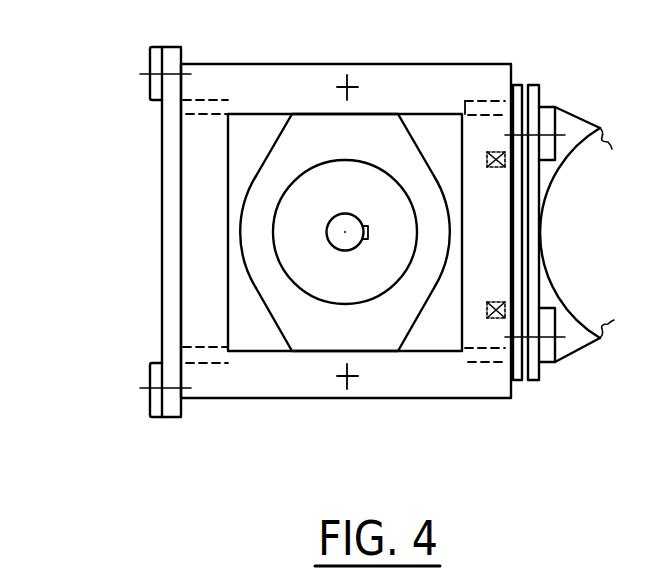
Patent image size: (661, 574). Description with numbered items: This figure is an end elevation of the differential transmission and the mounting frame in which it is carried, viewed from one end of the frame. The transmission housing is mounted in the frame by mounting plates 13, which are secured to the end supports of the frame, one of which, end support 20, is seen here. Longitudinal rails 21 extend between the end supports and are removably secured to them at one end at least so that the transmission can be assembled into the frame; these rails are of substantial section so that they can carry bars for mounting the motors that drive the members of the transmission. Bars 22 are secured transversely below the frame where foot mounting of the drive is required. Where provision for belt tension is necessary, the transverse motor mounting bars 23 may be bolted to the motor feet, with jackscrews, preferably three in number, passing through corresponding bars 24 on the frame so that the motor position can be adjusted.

The mounting plates 13 is at (275, 300).
The end support 20 is at (383, 383).
The longitudinal rails 21 is at (487, 358).
The bars 22 is at (170, 400).
The transverse motor mounting bars 23 is at (533, 380).
The bars on the frame 24 is at (517, 380).